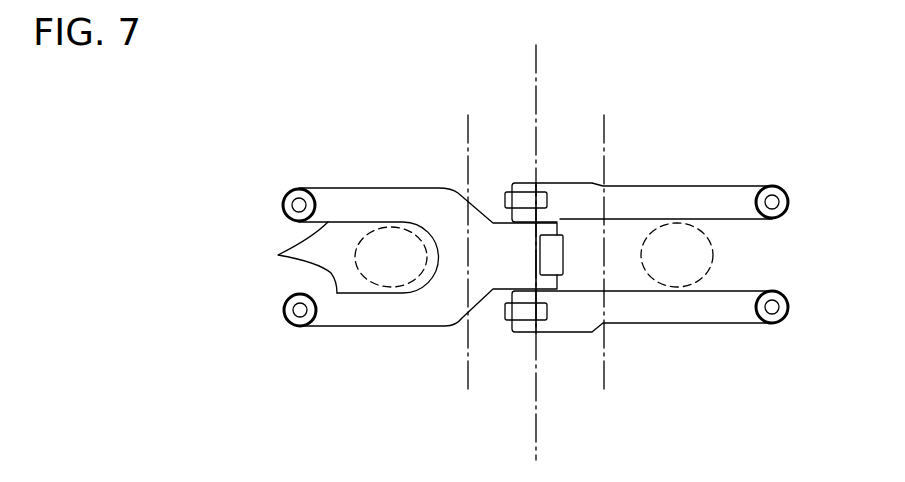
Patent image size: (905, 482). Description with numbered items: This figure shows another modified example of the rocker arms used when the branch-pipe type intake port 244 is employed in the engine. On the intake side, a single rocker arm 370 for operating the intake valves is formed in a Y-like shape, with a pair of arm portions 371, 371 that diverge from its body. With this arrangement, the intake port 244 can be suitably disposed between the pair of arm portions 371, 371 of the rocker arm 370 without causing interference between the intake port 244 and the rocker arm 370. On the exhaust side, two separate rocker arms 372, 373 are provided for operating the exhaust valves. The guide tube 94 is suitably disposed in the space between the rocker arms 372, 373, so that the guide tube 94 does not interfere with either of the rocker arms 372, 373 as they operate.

The rocker arm 370 is at (348, 190).
The arm portions 371 is at (276, 257).
The rocker arm 372 is at (668, 185).
The rocker arm 373 is at (693, 323).
The branch-pipe type intake port 244 is at (376, 287).
The guide tube 94 is at (713, 250).